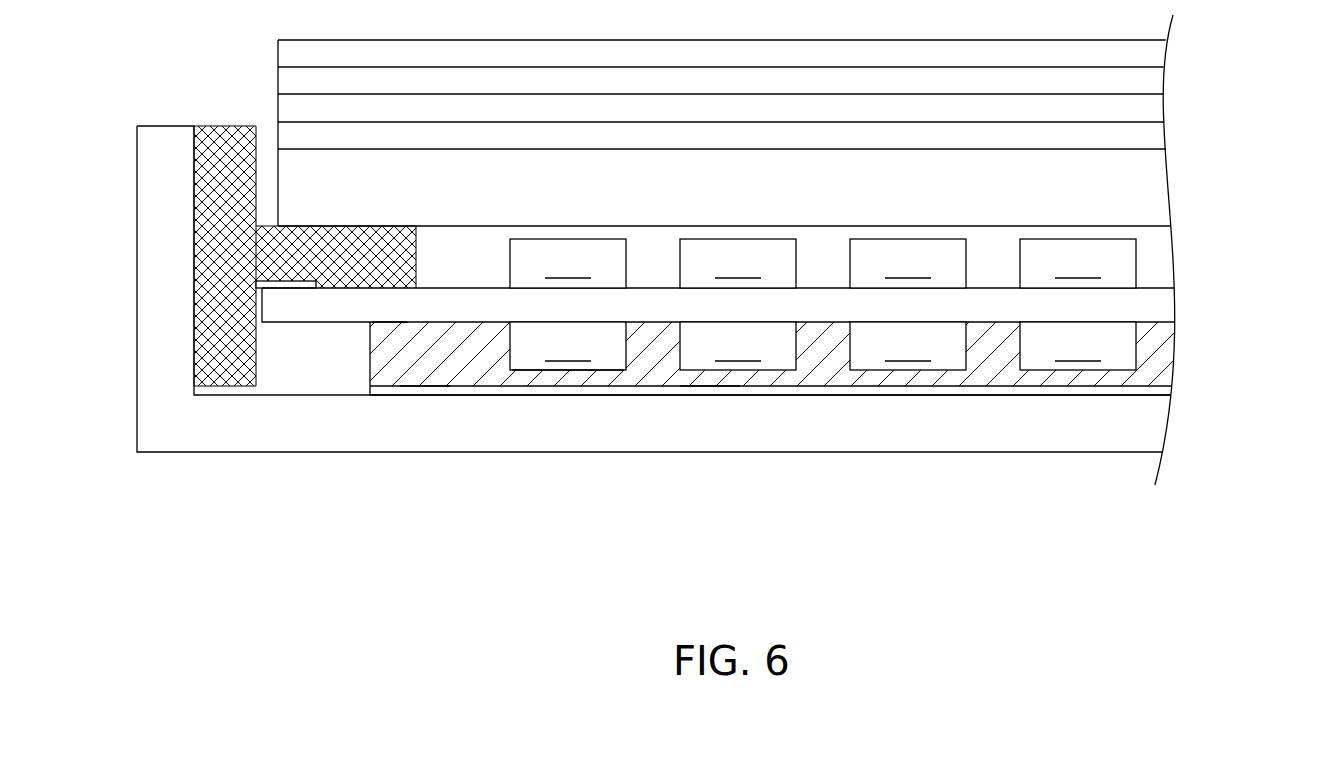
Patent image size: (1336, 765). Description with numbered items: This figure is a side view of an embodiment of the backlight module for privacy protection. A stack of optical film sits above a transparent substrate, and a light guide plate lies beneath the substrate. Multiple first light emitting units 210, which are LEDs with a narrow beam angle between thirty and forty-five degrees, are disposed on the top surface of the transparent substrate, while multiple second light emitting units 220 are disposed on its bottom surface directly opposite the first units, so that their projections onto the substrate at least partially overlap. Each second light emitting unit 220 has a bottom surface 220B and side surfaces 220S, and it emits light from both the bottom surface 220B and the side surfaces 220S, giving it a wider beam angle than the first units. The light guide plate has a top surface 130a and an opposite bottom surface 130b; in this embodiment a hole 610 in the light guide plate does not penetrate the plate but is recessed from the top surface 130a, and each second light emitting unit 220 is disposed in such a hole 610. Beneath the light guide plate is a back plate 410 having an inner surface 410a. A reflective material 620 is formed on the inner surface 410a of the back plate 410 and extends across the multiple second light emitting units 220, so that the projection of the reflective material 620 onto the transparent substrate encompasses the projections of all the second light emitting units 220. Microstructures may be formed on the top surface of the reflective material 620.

The top surface 130a is at (407, 318).
The bottom surface 130b is at (423, 387).
The first light emitting unit 210 is at (823, 263).
The second light emitting unit 220 is at (823, 346).
The side surfaces 220S is at (1150, 357).
The bottom surface 220B is at (590, 372).
The back plate 410 is at (865, 435).
The inner surface 410a is at (1067, 392).
The hole 610 is at (543, 372).
The reflective material 620 is at (707, 388).